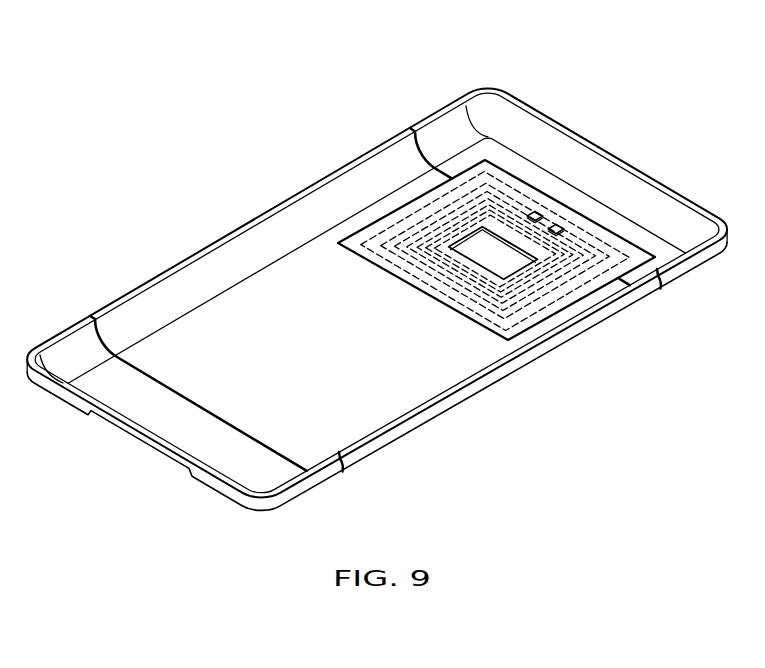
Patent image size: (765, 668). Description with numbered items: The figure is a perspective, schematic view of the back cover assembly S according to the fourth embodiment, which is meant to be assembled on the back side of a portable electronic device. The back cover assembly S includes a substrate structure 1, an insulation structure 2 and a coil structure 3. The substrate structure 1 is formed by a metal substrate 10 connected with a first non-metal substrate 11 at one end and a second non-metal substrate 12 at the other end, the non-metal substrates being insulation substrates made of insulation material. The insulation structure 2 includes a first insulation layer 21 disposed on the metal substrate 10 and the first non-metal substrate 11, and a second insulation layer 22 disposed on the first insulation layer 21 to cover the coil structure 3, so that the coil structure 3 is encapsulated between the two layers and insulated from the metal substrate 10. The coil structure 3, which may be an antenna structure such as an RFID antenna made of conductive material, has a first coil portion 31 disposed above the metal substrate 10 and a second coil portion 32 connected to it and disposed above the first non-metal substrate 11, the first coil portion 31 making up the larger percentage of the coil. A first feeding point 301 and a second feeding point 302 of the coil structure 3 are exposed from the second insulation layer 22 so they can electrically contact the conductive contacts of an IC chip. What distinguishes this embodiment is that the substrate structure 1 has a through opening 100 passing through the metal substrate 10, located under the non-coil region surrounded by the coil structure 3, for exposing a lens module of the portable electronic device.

The substrate structure 1 is at (377, 299).
The metal substrate 10 is at (463, 365).
The first non-metal substrate 11 is at (683, 270).
The second non-metal substrate 12 is at (225, 448).
The through opening 100 is at (508, 258).
The insulation structure 2 is at (493, 262).
The first insulation layer 21 is at (457, 290).
The second insulation layer 22 is at (370, 258).
The coil structure 3 is at (459, 127).
The first coil portion 31 is at (428, 235).
The second coil portion 32 is at (502, 195).
The first feeding point 301 is at (534, 211).
The second feeding point 302 is at (558, 225).
The back cover assembly S is at (57, 63).